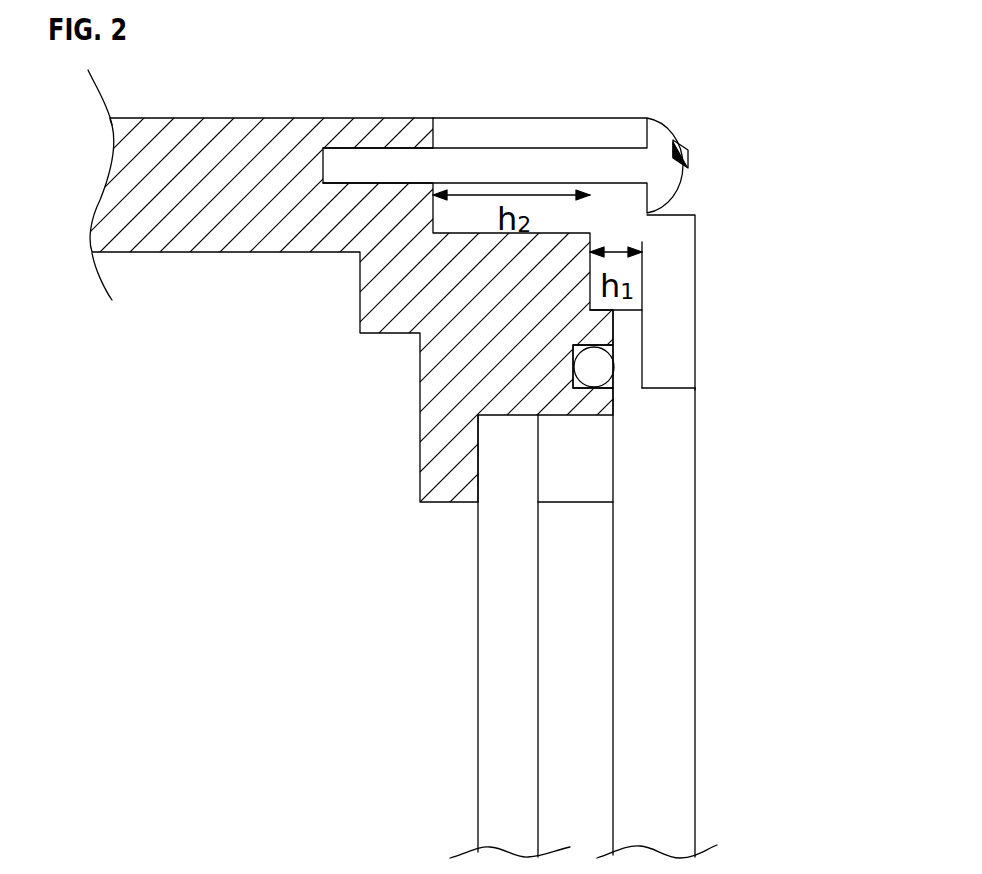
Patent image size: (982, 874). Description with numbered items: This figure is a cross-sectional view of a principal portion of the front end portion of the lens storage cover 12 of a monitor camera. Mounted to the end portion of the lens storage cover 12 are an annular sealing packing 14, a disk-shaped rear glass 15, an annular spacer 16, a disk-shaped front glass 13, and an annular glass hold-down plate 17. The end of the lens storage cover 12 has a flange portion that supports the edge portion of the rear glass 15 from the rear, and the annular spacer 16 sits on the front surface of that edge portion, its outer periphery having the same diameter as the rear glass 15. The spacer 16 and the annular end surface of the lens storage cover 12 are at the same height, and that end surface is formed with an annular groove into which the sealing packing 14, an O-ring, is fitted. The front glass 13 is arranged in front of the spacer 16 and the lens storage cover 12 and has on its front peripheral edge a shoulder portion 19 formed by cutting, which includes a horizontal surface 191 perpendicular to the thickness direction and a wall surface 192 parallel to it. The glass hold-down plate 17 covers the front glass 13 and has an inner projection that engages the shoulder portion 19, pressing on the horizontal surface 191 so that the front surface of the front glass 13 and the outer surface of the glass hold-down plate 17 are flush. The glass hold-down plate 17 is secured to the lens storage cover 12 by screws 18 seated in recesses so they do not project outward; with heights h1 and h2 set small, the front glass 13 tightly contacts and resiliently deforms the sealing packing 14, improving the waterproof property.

The lens storage cover 12 is at (271, 117).
The front glass 13 is at (760, 678).
The sealing packing 14 is at (582, 360).
The rear glass 15 is at (480, 672).
The spacer 16 is at (588, 540).
The glass hold-down plate 17 is at (695, 261).
The screws 18 is at (673, 115).
The shoulder portion 19 is at (763, 350).
The horizontal surface 191 is at (645, 327).
The wall surface 192 is at (672, 387).